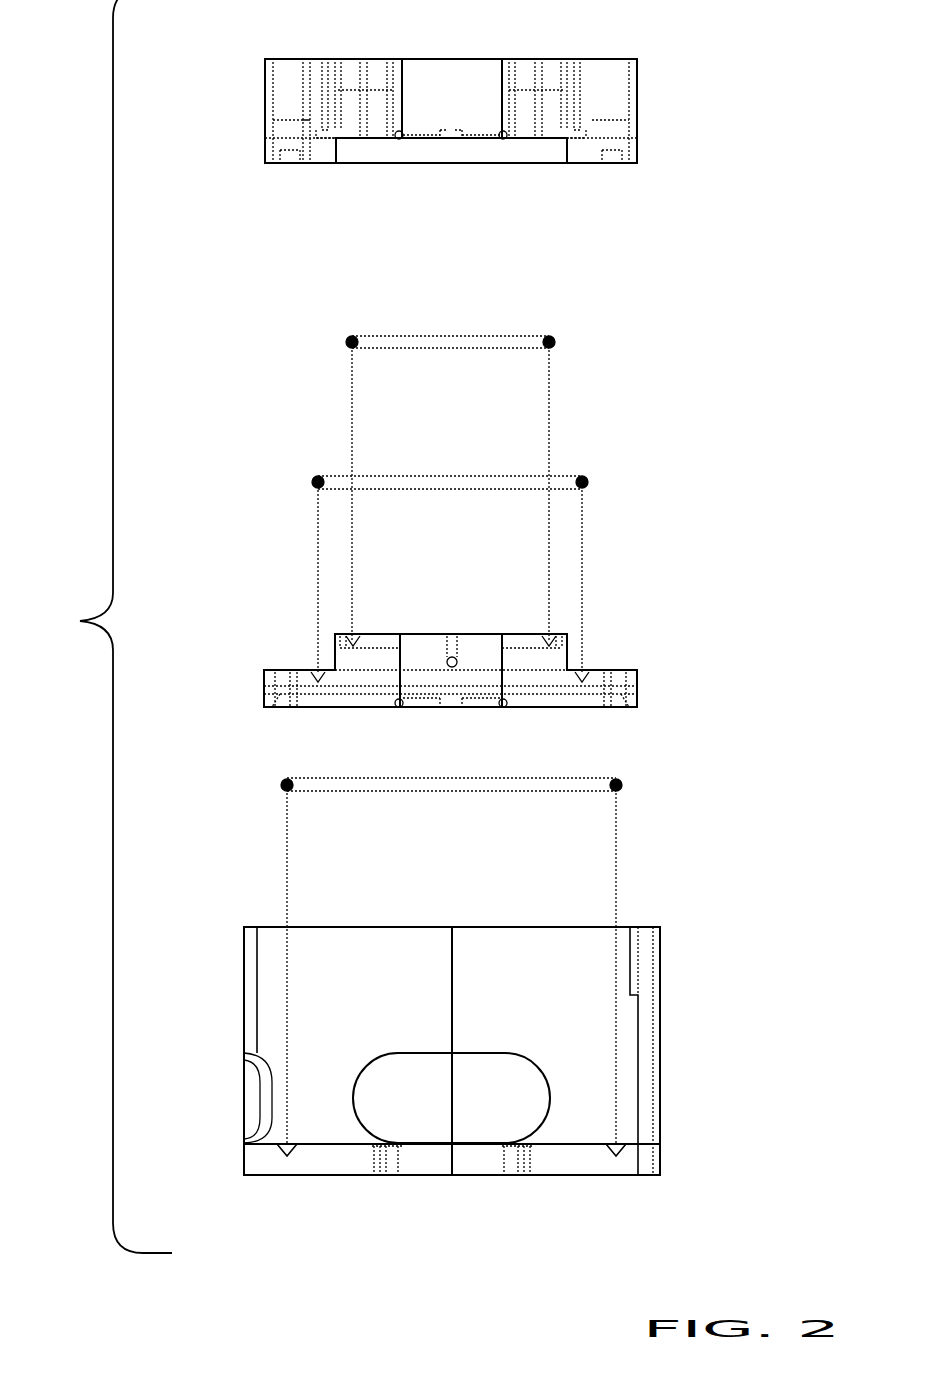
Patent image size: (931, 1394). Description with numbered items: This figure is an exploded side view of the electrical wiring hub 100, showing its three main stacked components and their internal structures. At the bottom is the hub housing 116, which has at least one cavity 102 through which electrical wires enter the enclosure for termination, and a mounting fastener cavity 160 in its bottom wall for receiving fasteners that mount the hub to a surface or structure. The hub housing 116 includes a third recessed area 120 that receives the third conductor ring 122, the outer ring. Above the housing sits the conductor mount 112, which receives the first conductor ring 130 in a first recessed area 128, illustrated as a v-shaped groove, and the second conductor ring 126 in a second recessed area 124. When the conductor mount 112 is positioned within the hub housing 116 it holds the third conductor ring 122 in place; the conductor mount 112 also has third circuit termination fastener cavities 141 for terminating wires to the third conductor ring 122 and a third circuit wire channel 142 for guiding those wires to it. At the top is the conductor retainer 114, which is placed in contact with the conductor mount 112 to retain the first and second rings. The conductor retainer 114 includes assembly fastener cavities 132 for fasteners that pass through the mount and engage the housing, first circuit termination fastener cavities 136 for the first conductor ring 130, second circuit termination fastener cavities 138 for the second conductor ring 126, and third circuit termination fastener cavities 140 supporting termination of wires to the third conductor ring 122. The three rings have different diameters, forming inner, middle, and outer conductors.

The electrical wiring hub 100 is at (102, 626).
The cavity 102 is at (428, 1165).
The conductor mount 112 is at (640, 670).
The conductor retainer 114 is at (637, 88).
The hub housing 116 is at (252, 928).
The third recessed area 120 is at (620, 1140).
The third conductor ring 122 is at (590, 790).
The second recessed area 124 is at (585, 668).
The second conductor ring 126 is at (568, 480).
The first recessed area 128 is at (355, 640).
The first conductor ring 130 is at (485, 335).
The assembly fastener cavities 132 is at (520, 110).
The first circuit termination fastener cavities 136 is at (352, 105).
The second circuit termination fastener cavities 138 is at (318, 127).
The third circuit termination fastener cavities 140 is at (288, 153).
The third circuit termination fastener cavities 141 is at (288, 680).
The third circuit wire channel 142 is at (640, 695).
The mounting fastener cavity 160 is at (520, 1175).